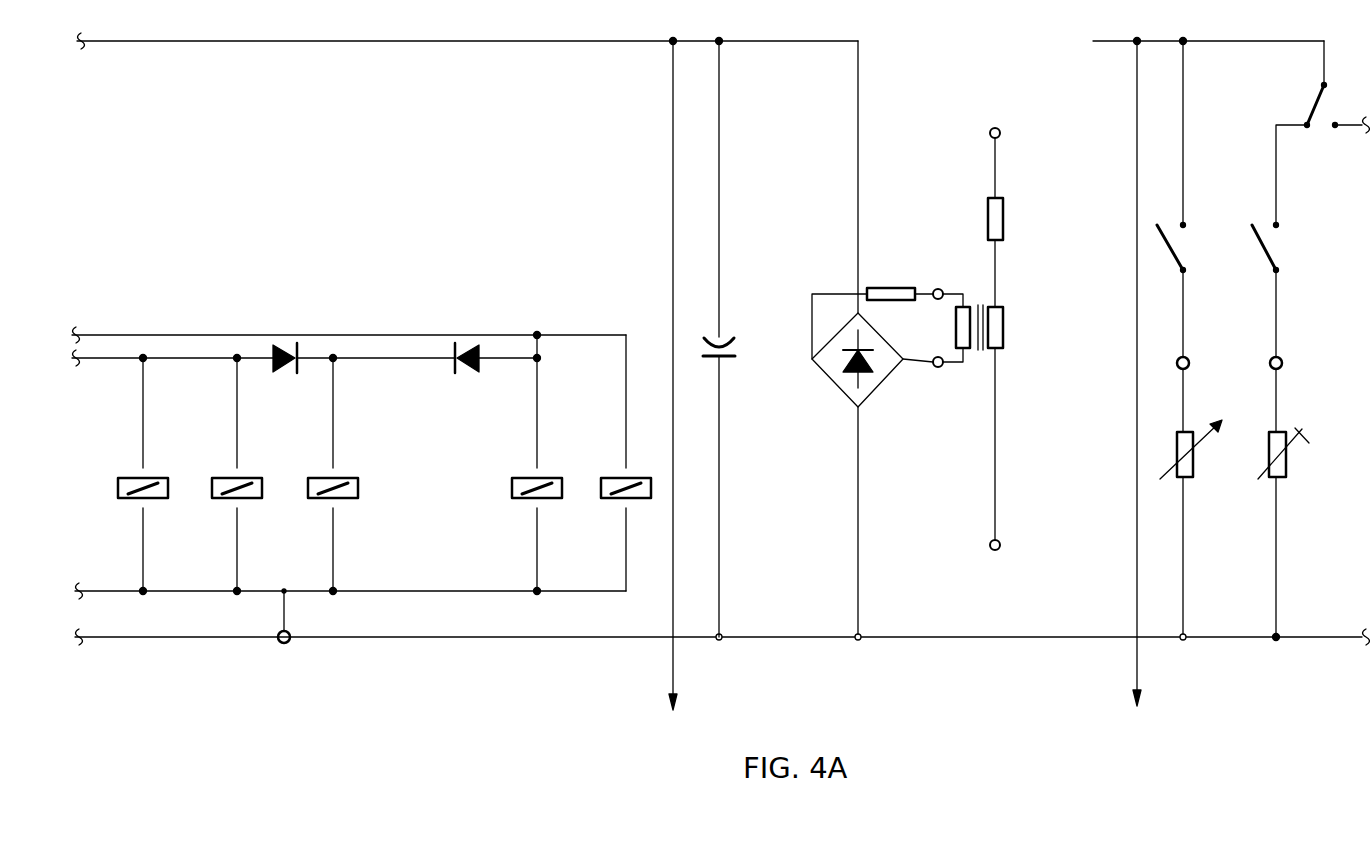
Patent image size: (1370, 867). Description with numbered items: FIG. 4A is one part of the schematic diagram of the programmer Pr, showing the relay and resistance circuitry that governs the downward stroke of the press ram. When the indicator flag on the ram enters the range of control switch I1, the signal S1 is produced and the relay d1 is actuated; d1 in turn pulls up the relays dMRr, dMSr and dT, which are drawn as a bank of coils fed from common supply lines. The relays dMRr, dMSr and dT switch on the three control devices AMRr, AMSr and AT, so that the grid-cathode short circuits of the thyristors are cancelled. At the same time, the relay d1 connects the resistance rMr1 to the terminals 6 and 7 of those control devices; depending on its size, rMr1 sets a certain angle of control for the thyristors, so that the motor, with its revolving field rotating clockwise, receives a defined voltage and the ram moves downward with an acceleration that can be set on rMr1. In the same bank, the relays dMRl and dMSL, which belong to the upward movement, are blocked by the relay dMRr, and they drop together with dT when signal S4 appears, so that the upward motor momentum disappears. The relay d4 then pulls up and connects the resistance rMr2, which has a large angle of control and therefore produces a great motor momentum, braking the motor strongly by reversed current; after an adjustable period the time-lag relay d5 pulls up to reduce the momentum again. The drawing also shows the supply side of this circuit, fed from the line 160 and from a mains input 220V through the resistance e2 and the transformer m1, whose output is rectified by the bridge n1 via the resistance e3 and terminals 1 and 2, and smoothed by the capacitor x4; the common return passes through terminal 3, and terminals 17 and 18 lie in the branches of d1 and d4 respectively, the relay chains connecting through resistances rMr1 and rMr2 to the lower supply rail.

The terminal 3 is at (292, 617).
The terminal 6 is at (672, 385).
The terminal 7 is at (1136, 385).
The terminal 17 is at (1194, 351).
The terminal 18 is at (1288, 351).
The supply line 160 is at (1192, 42).
The terminal 1 is at (939, 282).
The terminal 2 is at (927, 371).
The relay dMRr is at (156, 474).
The relay dMSr is at (249, 474).
The relay dT is at (338, 474).
The relay dMRl is at (547, 463).
The relay dMSL is at (637, 463).
The capacitor x4 is at (729, 339).
The rectifier n1 is at (857, 360).
The resistor e3 is at (872, 313).
The resistor e2 is at (1010, 252).
The transformer m1 is at (988, 328).
The 220V supply terminal 220V is at (998, 151).
The relay d1 is at (1182, 157).
The relay d4 is at (1276, 248).
The time-lag relay d5 is at (1323, 133).
The resistance rMr1 is at (1182, 530).
The resistance rMr2 is at (1273, 534).